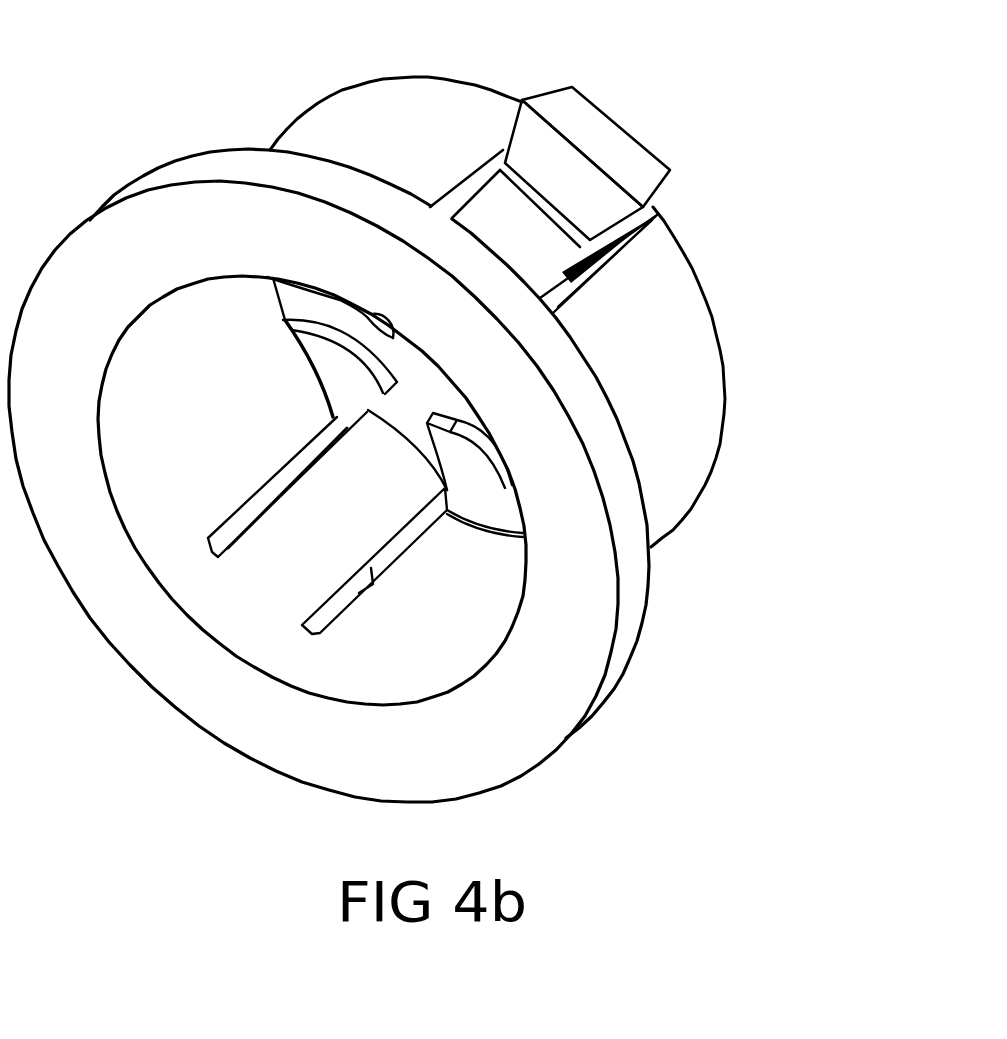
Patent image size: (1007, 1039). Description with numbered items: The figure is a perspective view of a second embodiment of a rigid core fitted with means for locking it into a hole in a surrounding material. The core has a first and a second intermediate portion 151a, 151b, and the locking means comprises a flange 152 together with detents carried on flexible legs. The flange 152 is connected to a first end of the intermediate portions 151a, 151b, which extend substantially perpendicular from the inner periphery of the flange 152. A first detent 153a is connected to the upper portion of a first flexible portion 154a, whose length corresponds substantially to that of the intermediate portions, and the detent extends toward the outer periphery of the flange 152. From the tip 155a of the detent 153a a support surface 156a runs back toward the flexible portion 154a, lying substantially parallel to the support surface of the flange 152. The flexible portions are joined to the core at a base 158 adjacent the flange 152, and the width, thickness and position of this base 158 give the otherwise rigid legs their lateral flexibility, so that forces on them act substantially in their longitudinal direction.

The first intermediate portion 151a is at (693, 387).
The second intermediate portion 151b is at (380, 118).
The flange 152 is at (623, 640).
The first detent 153a is at (607, 135).
The first flexible portion 154a is at (543, 243).
The tip of first detent 155a is at (615, 170).
The support surface of first detent 156a is at (600, 193).
The base of flexible portions 158 is at (262, 588).